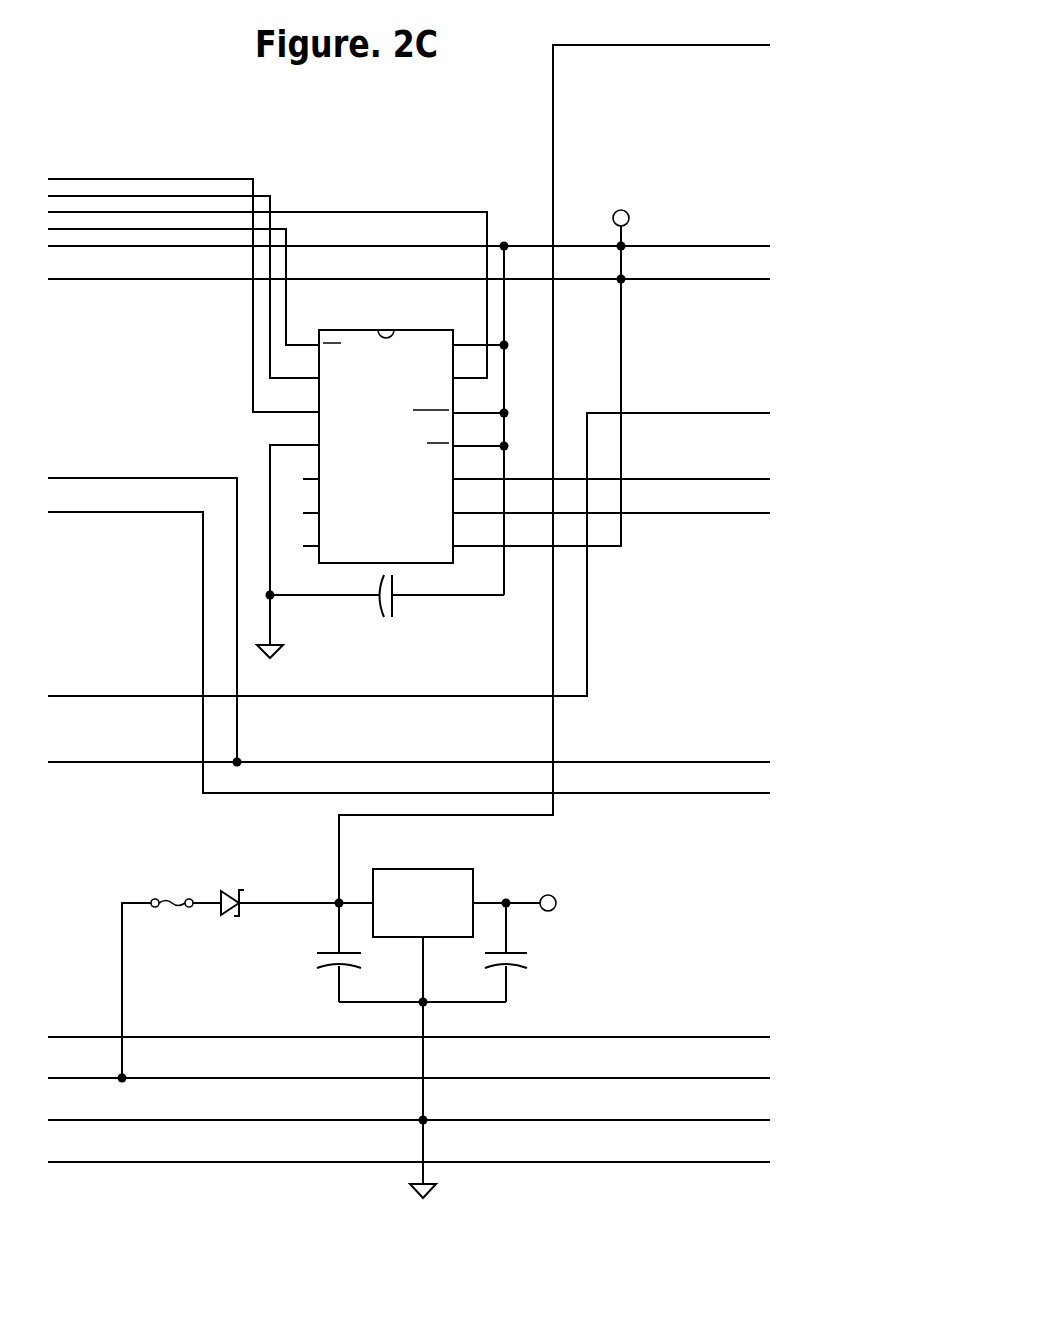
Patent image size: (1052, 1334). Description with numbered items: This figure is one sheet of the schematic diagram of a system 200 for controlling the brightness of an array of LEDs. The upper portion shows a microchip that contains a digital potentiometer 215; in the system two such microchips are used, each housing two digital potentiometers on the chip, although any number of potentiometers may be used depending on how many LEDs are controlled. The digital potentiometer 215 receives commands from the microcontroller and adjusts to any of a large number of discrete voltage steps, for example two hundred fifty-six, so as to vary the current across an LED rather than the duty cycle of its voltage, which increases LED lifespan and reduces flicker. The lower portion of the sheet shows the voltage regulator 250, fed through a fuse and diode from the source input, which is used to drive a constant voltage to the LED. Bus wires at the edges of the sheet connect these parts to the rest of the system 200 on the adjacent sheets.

The system 200 is at (699, 1199).
The digital potentiometer 215 is at (420, 564).
The voltage regulator 250 is at (474, 871).